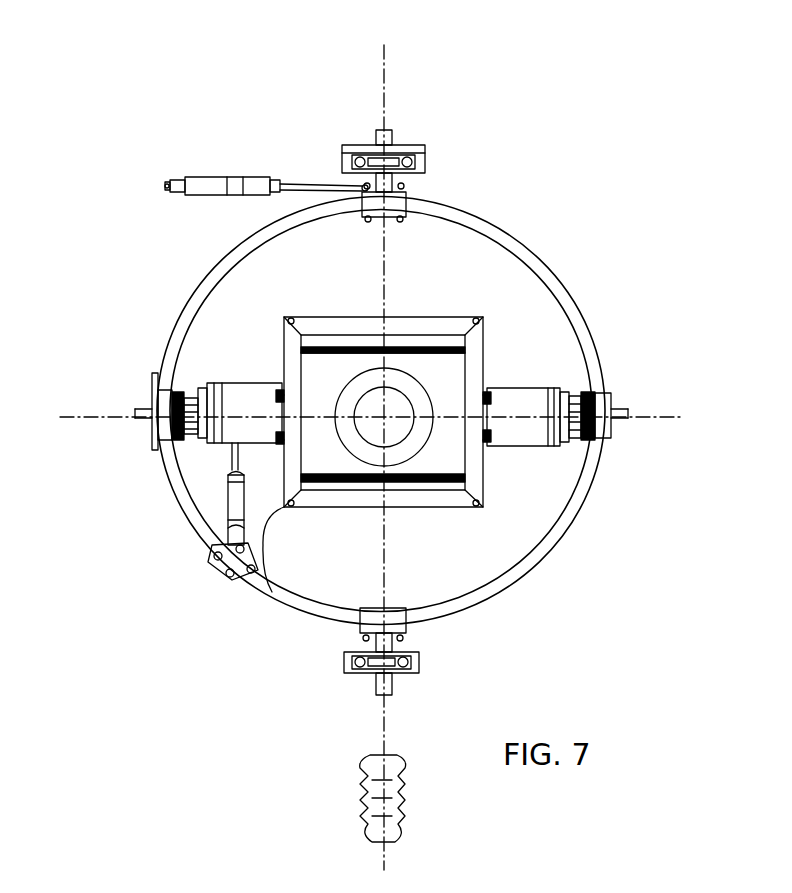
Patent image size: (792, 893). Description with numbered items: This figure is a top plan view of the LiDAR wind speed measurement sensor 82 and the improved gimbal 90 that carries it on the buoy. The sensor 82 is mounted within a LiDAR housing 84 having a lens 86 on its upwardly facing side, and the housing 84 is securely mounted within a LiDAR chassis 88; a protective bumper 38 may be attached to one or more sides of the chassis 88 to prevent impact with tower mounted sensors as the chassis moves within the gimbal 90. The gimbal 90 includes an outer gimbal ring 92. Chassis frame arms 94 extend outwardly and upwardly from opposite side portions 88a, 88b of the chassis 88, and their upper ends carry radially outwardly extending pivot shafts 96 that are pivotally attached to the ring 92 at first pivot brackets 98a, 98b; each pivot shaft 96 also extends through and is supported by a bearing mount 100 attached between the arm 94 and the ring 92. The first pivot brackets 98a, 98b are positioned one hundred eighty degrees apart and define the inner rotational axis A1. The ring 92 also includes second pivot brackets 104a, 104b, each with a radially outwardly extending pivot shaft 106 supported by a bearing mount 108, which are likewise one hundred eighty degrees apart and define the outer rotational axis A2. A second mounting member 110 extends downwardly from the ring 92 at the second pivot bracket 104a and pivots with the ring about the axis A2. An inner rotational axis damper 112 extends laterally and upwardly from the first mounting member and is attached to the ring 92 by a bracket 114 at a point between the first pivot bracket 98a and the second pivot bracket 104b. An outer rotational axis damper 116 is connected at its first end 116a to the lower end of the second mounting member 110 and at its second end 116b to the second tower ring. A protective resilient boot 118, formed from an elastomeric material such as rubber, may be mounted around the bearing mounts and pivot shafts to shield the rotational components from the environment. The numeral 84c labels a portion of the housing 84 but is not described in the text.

The gimbal 90 is at (258, 104).
The inner rotational axis A1 is at (668, 411).
The outer rotational axis A2 is at (390, 72).
The outer gimbal ring 92 is at (505, 238).
The second mounting member 110 is at (328, 200).
The LiDAR housing 84 is at (330, 345).
The frame cross member 84c is at (408, 358).
The protective bumper 38 is at (440, 508).
The LiDAR wind speed measurement sensor 82 is at (442, 394).
The lens 86 is at (398, 398).
The LiDAR chassis 88 is at (300, 512).
The side portion 88a is at (270, 592).
The side portion 88b is at (487, 470).
The chassis frame arms 94 is at (235, 388).
The bearing mount 100 is at (170, 392).
The pivot shaft 96 is at (142, 405).
The first pivot bracket 98a is at (162, 426).
The first pivot bracket 98b is at (610, 440).
The inner rotational axis damper 112 is at (228, 505).
The bracket 114 is at (218, 576).
The second pivot bracket 104a is at (406, 207).
The second pivot bracket 104b is at (407, 622).
The pivot shaft 106 is at (393, 140).
The bearing mount 108 is at (426, 160).
The outer rotational axis damper 116 is at (225, 197).
The first end 116a is at (362, 188).
The second end 116b is at (174, 180).
The protective resilient boot 118 is at (360, 790).